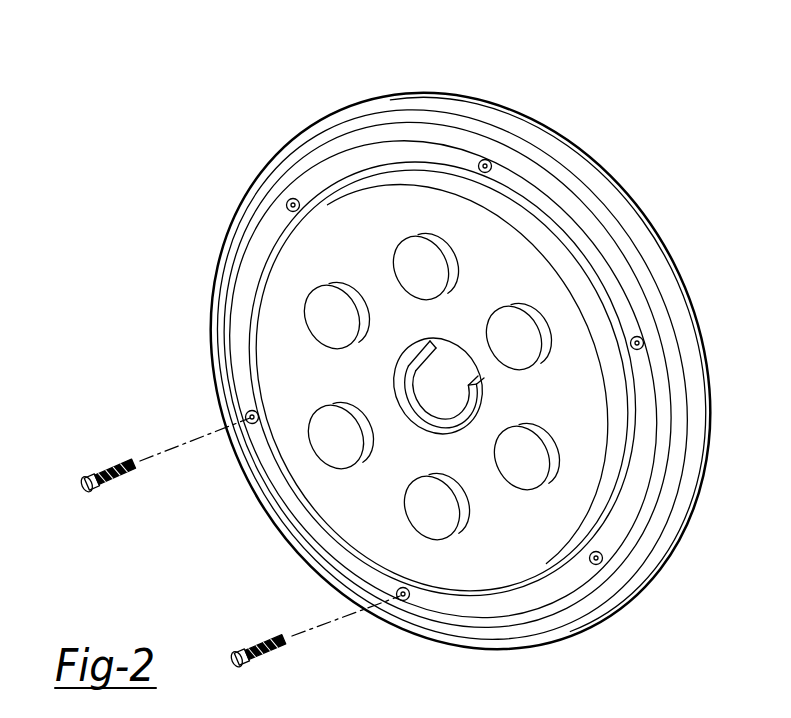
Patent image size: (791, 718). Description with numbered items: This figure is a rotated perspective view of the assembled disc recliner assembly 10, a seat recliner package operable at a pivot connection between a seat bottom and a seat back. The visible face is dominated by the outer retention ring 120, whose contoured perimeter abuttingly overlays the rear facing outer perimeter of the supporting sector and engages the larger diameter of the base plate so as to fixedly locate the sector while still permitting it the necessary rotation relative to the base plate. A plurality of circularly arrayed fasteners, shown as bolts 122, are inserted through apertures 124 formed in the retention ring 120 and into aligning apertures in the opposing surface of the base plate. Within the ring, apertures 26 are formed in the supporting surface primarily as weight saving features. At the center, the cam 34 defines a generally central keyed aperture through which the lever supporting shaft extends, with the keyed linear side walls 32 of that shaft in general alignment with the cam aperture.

The disc recliner assembly 10 is at (660, 190).
The outer retention ring 120 is at (422, 94).
The bolts 122 is at (125, 472).
The apertures 124 is at (486, 172).
The aperture 26 is at (398, 378).
The linear side walls 32 is at (438, 357).
The cam 34 is at (463, 390).